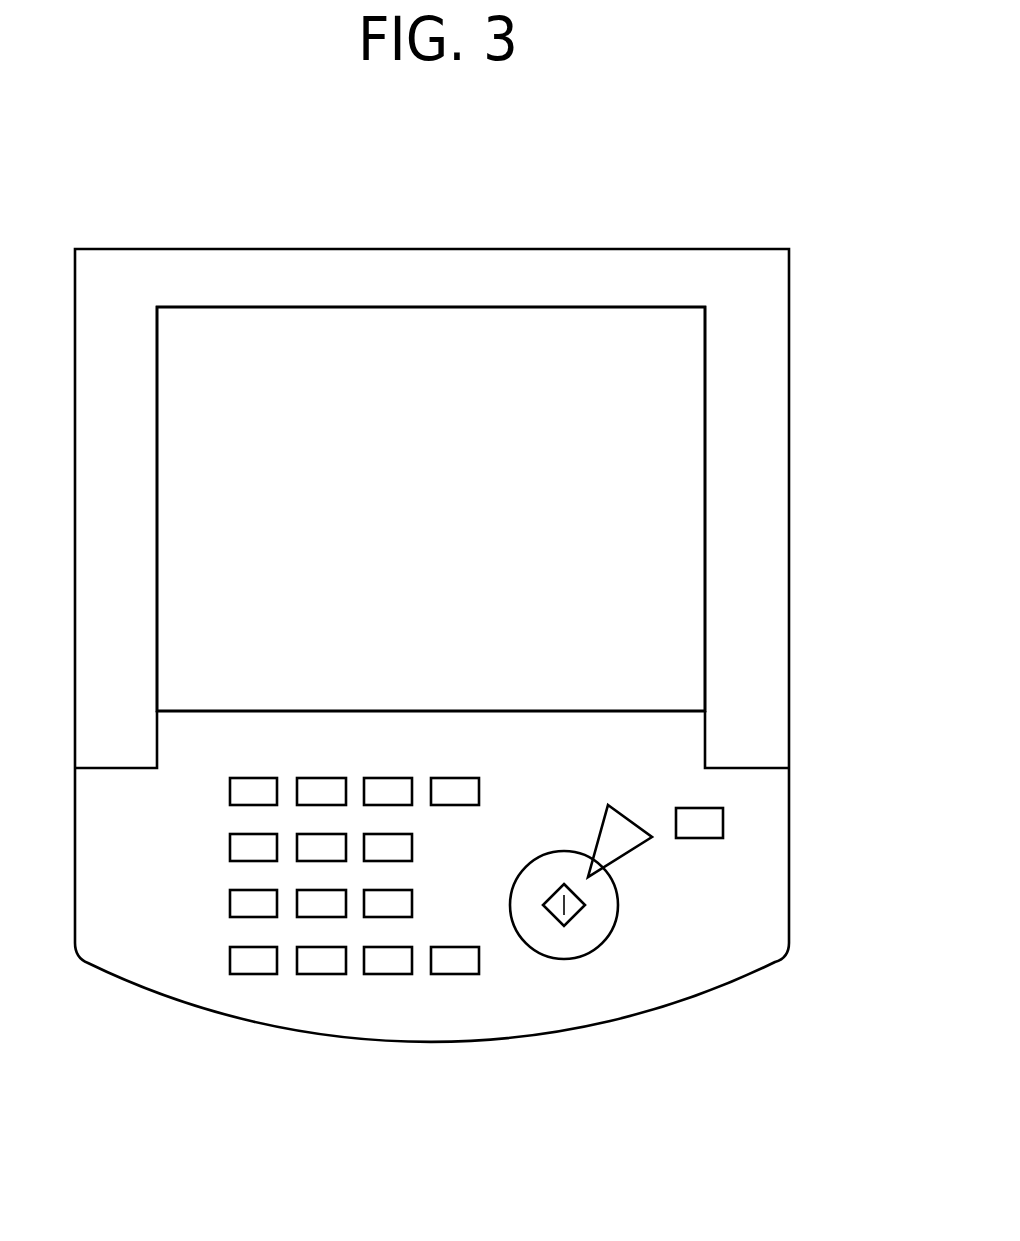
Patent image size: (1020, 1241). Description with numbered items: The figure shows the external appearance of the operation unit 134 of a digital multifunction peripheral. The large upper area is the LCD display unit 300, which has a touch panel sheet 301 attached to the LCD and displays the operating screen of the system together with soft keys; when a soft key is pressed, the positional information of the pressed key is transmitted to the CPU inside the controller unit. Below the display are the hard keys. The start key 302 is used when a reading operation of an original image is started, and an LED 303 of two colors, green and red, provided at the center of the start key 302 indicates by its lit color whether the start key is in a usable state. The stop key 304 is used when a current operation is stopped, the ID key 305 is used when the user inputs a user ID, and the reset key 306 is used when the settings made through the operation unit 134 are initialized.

The operation unit 134 is at (702, 249).
The LCD display unit 300 is at (705, 368).
The touch panel sheet 301 is at (662, 507).
The start key 302 is at (566, 959).
The LED 303 is at (580, 912).
The stop key 304 is at (636, 851).
The ID key 305 is at (455, 974).
The reset key 306 is at (723, 822).